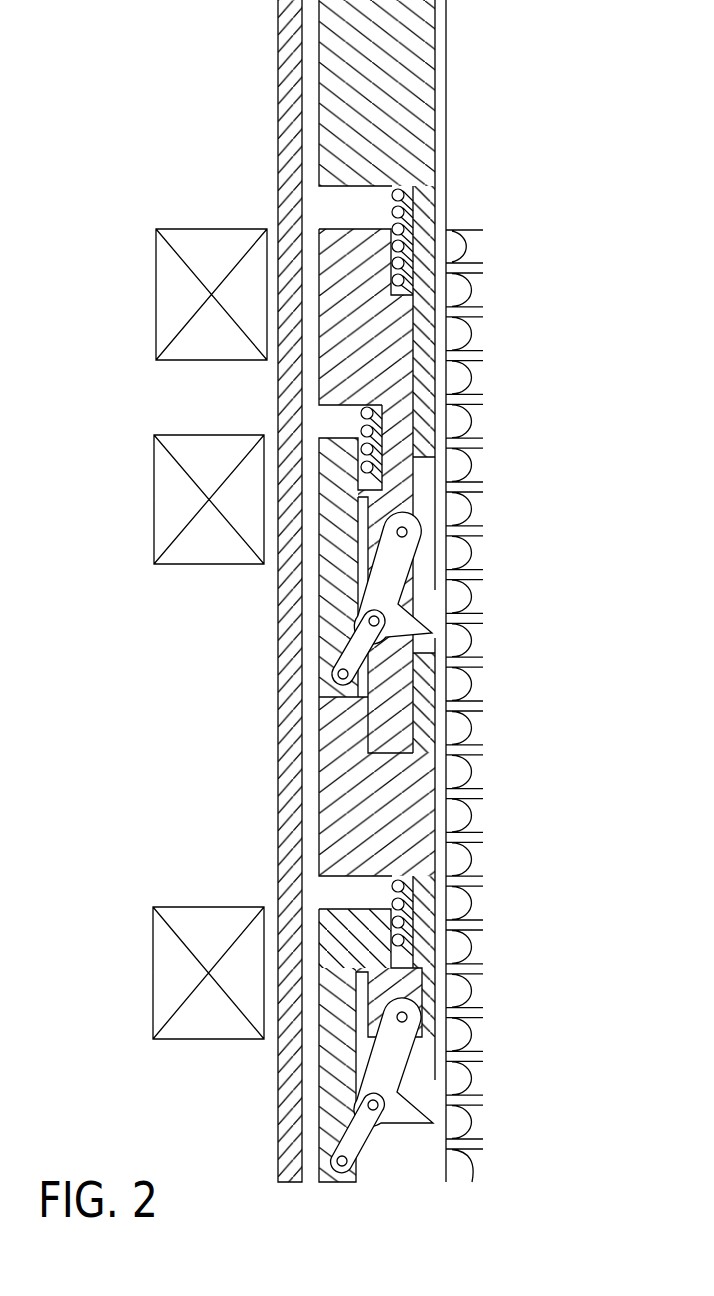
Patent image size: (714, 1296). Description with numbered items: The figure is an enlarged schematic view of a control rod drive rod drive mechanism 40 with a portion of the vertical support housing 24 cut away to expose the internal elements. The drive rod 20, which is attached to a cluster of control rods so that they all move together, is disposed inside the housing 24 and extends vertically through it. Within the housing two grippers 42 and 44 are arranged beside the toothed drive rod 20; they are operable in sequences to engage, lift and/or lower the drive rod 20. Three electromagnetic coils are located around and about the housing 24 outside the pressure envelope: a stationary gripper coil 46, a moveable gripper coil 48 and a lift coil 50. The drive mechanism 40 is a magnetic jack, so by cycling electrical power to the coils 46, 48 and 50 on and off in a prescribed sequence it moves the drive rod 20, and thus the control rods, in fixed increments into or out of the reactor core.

The drive rod 20 is at (477, 377).
The vertical support housing 24 is at (278, 93).
The drive rod drive mechanism 40 is at (505, 502).
The gripper 42 is at (404, 594).
The gripper 44 is at (403, 1081).
The stationary gripper coil 46 is at (153, 945).
The moveable gripper coil 48 is at (154, 468).
The lift coil 50 is at (156, 270).